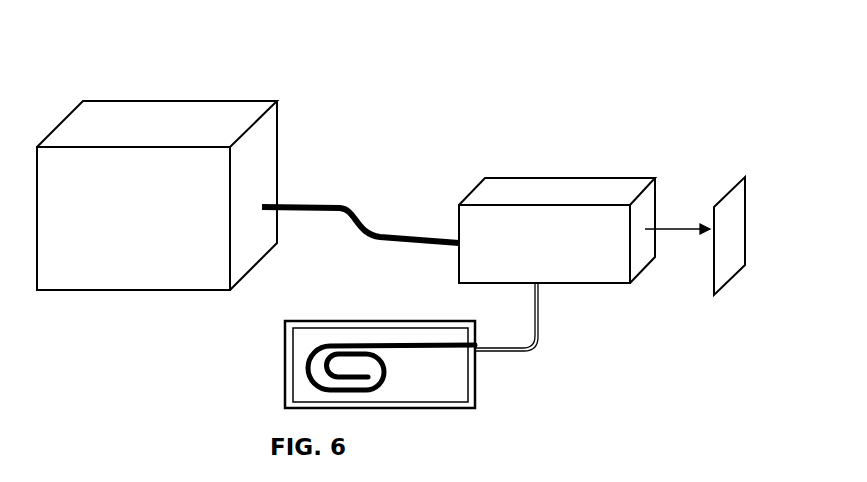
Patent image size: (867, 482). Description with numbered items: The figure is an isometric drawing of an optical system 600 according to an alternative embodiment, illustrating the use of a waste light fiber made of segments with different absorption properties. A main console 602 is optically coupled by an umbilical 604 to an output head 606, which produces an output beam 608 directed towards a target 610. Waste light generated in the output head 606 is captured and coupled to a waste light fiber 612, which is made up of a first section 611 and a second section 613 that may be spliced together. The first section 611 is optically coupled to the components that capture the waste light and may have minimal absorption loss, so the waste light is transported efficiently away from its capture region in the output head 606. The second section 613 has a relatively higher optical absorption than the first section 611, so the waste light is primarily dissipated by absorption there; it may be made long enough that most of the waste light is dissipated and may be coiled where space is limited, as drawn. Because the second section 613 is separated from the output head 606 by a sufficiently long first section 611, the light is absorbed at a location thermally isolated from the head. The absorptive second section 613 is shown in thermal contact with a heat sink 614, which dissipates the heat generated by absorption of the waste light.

The optical system 600 is at (587, 89).
The main console 602 is at (84, 101).
The umbilical 604 is at (355, 206).
The output head 606 is at (543, 186).
The output beam 608 is at (681, 231).
The target 610 is at (733, 183).
The first section 611 is at (540, 322).
The waste light fiber 612 is at (562, 386).
The second section 613 is at (388, 365).
The heat sink 614 is at (285, 362).